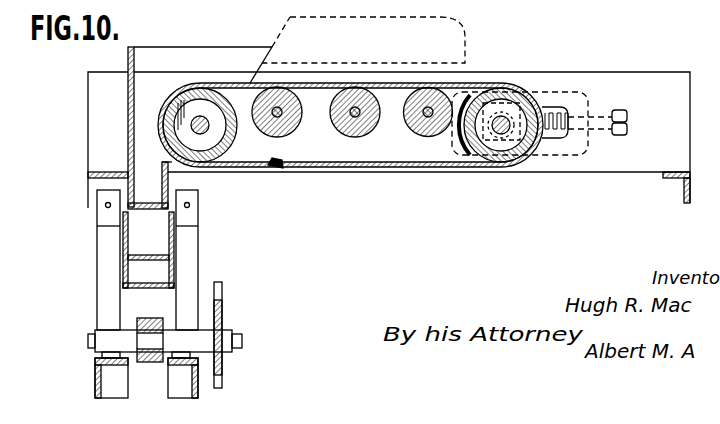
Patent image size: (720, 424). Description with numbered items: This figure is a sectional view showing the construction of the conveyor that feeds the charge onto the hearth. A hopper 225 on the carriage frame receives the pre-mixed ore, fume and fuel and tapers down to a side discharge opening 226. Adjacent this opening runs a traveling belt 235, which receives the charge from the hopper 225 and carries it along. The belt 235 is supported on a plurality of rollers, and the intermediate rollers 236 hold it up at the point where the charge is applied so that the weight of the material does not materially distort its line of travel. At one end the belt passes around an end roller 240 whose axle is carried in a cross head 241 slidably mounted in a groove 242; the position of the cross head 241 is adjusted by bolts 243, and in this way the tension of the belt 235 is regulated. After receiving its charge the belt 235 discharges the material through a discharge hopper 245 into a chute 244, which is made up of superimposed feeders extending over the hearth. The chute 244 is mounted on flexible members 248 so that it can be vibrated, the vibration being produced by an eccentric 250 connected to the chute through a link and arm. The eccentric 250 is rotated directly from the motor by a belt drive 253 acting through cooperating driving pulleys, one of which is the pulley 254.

The hopper 225 is at (466, 30).
The side discharge opening 226 is at (283, 27).
The traveling belt 235 is at (284, 168).
The intermediate rollers 236 is at (405, 130).
The end roller 240 is at (512, 97).
The cross head 241 is at (512, 172).
The groove 242 is at (558, 138).
The bolts 243 is at (622, 110).
The chute 244 is at (138, 229).
The discharge hopper 245 is at (163, 47).
The flexible members 248 is at (105, 247).
The eccentric 250 is at (136, 328).
The belt drive 253 is at (223, 290).
The driving pulley 254 is at (226, 332).